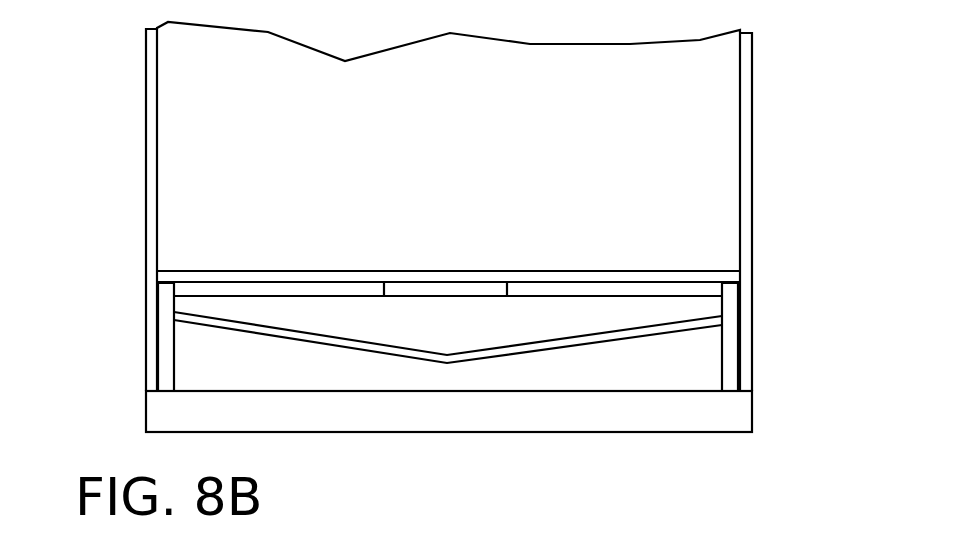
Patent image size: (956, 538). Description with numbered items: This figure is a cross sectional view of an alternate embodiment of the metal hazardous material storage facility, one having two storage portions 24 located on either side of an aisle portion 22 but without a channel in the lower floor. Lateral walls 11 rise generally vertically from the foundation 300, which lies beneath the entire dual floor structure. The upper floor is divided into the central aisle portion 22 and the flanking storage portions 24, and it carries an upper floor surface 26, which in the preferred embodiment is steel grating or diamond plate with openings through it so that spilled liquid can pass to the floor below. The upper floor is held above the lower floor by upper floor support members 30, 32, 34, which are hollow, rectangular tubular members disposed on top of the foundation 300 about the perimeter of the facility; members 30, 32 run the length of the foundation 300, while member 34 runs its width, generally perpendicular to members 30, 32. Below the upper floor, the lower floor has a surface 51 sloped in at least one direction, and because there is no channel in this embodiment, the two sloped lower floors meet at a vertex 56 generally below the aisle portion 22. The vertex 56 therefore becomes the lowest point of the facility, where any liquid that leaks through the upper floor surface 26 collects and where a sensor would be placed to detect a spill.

The lateral walls 11 is at (148, 127).
The aisle portion 22 is at (458, 252).
The storage portion 24 is at (298, 252).
The upper floor surface 26 is at (690, 273).
The upper floor support member 30 is at (165, 339).
The upper floor support member 32 is at (735, 367).
The upper floor support member 34 is at (678, 293).
The sloped surface 51 is at (323, 338).
The vertex 56 is at (447, 360).
The foundation 300 is at (620, 427).